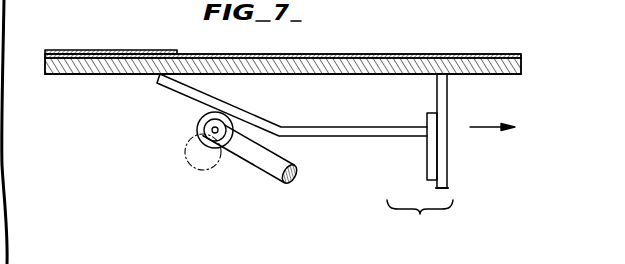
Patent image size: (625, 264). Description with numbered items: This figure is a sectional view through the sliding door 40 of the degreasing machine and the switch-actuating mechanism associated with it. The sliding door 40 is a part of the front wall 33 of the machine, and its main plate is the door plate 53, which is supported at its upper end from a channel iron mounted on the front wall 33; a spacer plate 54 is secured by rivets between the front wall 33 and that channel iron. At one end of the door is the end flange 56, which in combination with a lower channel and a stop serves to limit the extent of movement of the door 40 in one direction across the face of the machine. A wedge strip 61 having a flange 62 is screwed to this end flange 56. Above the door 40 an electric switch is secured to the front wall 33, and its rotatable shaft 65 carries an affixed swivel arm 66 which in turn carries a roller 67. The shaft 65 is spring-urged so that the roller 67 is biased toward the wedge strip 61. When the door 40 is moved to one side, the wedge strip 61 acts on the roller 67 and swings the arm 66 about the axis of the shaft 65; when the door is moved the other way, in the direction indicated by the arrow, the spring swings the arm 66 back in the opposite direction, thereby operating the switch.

The front wall 33 is at (305, 57).
The door plate 53 is at (130, 75).
The spacer plate 54 is at (384, 59).
The wedge strip 61 is at (204, 102).
The roller 67 is at (197, 129).
The swivel arm 66 is at (248, 154).
The rotatable shaft 65 is at (306, 176).
The end flange 56 is at (440, 117).
The flange 62 is at (433, 160).
The sliding door 40 is at (420, 221).